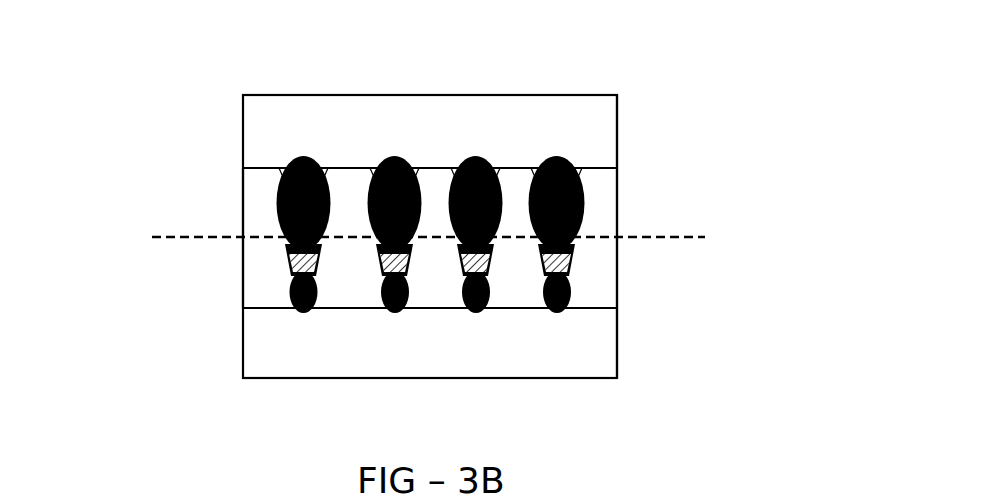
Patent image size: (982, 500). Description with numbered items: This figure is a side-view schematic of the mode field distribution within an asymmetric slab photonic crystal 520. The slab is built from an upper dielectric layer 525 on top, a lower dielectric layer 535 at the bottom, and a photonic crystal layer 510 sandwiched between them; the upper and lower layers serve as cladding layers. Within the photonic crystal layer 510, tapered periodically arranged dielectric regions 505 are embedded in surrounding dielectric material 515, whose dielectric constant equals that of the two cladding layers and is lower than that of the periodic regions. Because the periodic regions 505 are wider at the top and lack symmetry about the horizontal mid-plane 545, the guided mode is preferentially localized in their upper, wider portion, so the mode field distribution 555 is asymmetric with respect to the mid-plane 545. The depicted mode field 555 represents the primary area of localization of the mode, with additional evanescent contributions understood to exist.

The periodically arranged dielectric regions 505 is at (572, 270).
The photonic crystal layer 510 is at (620, 217).
The surrounding dielectric material 515 is at (263, 278).
The asymmetric slab photonic crystal 520 is at (668, 86).
The upper dielectric layer 525 is at (327, 130).
The lower dielectric layer 535 is at (295, 338).
The horizontal mid-plane 545 is at (633, 238).
The mode field distribution 555 is at (327, 181).